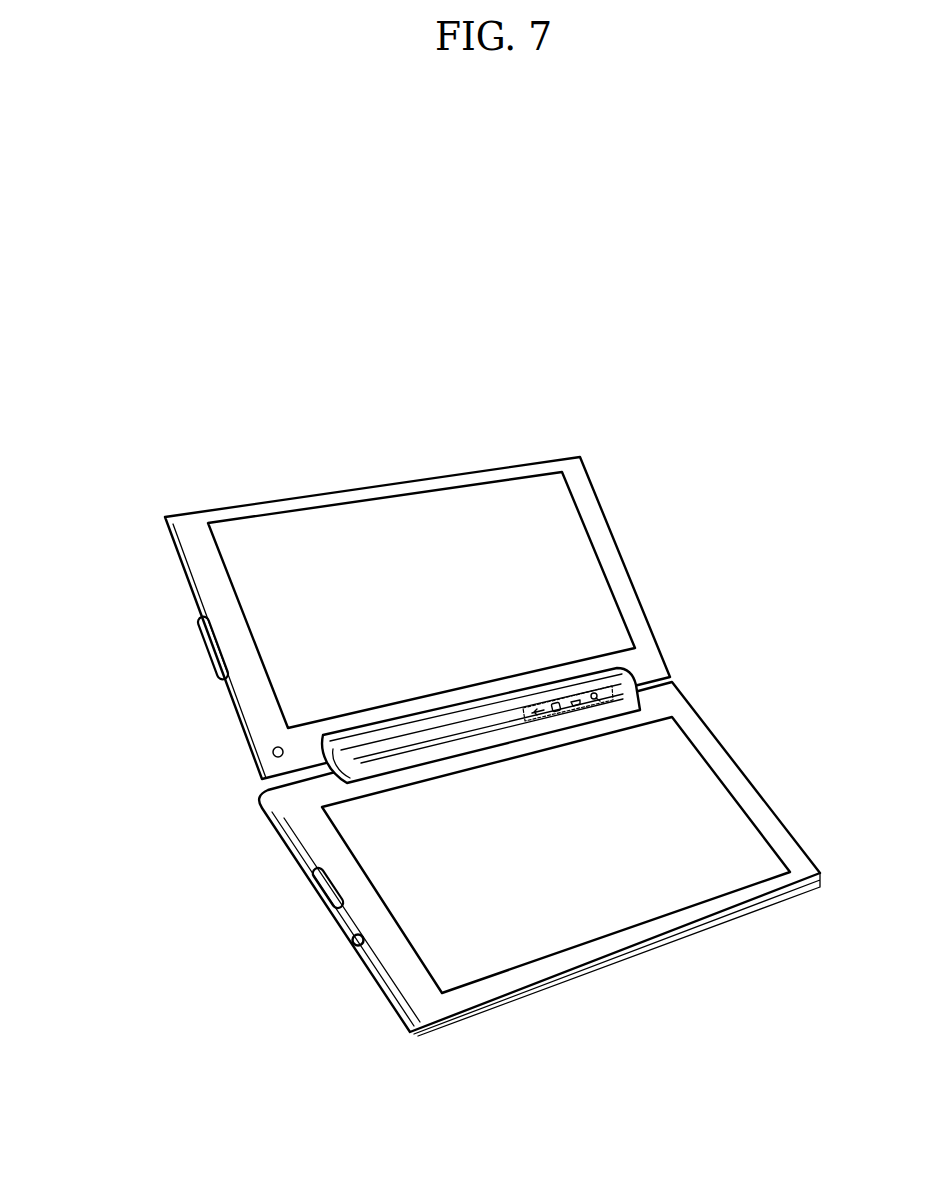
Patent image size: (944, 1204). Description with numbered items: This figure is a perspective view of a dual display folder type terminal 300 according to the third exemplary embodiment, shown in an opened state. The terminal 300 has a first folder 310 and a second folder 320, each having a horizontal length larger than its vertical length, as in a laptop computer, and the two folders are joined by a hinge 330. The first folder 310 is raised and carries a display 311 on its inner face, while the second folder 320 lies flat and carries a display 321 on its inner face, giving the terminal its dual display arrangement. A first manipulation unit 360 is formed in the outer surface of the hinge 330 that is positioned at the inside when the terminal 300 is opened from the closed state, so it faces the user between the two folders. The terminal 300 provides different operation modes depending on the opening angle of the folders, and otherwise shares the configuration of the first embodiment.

The dual display folder type terminal 300 is at (722, 359).
The first folder 310 is at (374, 618).
The first display 311 is at (558, 536).
The second folder 320 is at (537, 859).
The second display 321 is at (693, 820).
The hinge 330 is at (360, 772).
The first manipulation unit 360 is at (592, 704).